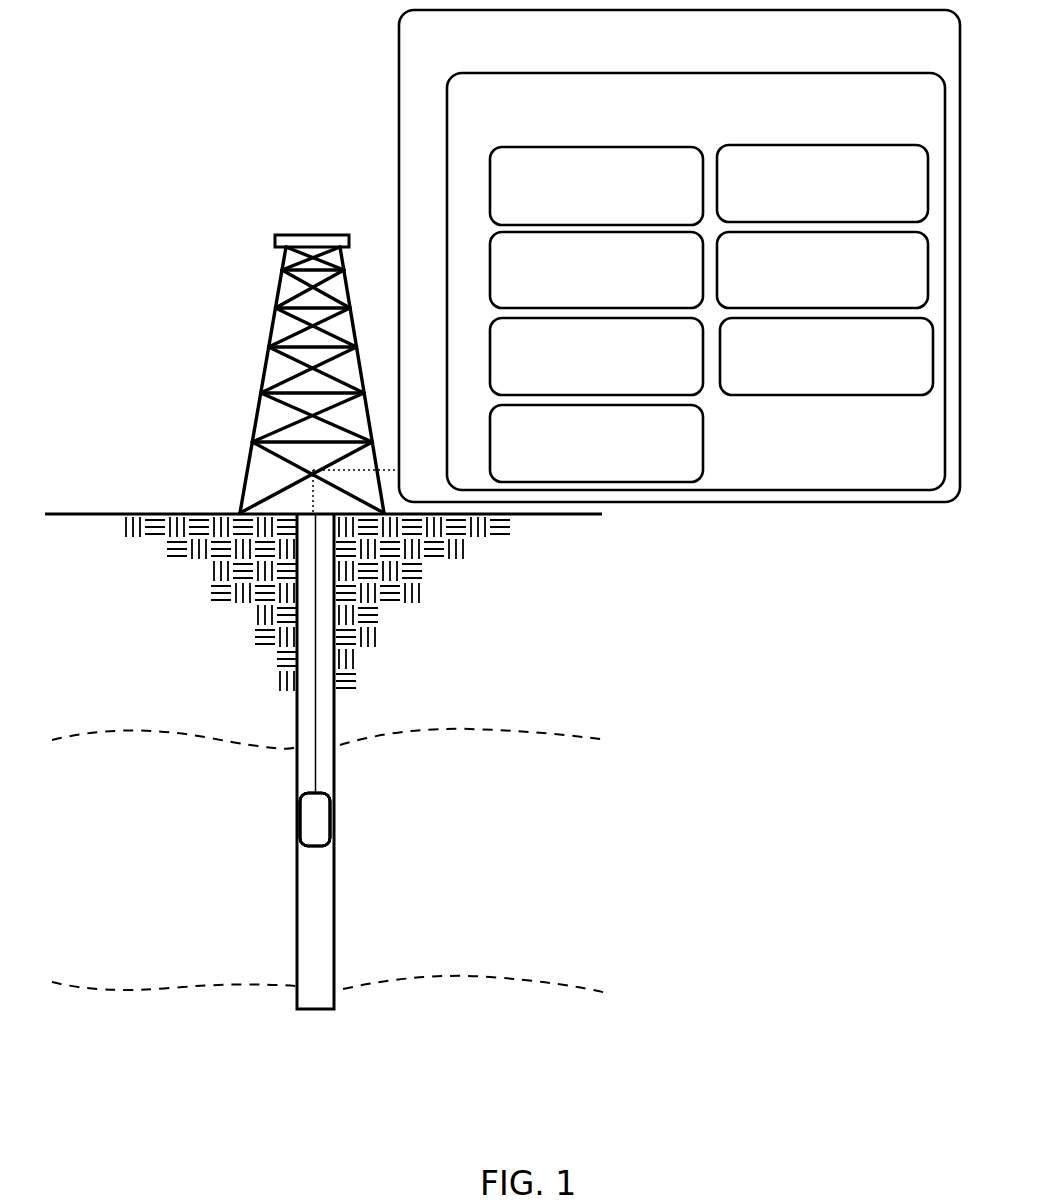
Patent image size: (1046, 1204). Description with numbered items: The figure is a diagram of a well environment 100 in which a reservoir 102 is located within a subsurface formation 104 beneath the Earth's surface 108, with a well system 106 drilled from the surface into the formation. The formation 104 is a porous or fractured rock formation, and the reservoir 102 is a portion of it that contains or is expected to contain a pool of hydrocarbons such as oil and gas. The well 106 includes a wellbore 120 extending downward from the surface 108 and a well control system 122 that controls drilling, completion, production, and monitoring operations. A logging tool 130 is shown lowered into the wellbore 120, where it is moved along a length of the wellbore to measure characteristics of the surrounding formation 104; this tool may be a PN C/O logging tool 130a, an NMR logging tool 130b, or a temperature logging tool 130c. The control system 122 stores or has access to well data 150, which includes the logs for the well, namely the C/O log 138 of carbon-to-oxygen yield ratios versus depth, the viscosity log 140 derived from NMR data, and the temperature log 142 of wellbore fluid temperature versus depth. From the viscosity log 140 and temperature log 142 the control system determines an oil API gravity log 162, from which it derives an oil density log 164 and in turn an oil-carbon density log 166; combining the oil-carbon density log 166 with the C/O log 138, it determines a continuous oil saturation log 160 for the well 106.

The well environment 100 is at (168, 210).
The reservoir 102 is at (572, 856).
The subsurface formation 104 is at (563, 646).
The well system 106 is at (211, 456).
The surface 108 is at (522, 520).
The wellbore 120 is at (317, 1018).
The well control system 122 is at (446, 66).
The logging tool 130 is at (336, 813).
The PN C/O logging tool 130a is at (365, 813).
The NMR logging tool 130b is at (365, 819).
The temperature logging tool 130c is at (361, 824).
The C/O log 138 is at (577, 207).
The viscosity log 140 is at (577, 294).
The temperature log 142 is at (577, 380).
The well data 150 is at (495, 129).
The continuous oil saturation log 160 is at (807, 389).
The oil API gravity log 162 is at (577, 466).
The oil density log 164 is at (803, 206).
The oil-carbon density log 166 is at (803, 302).